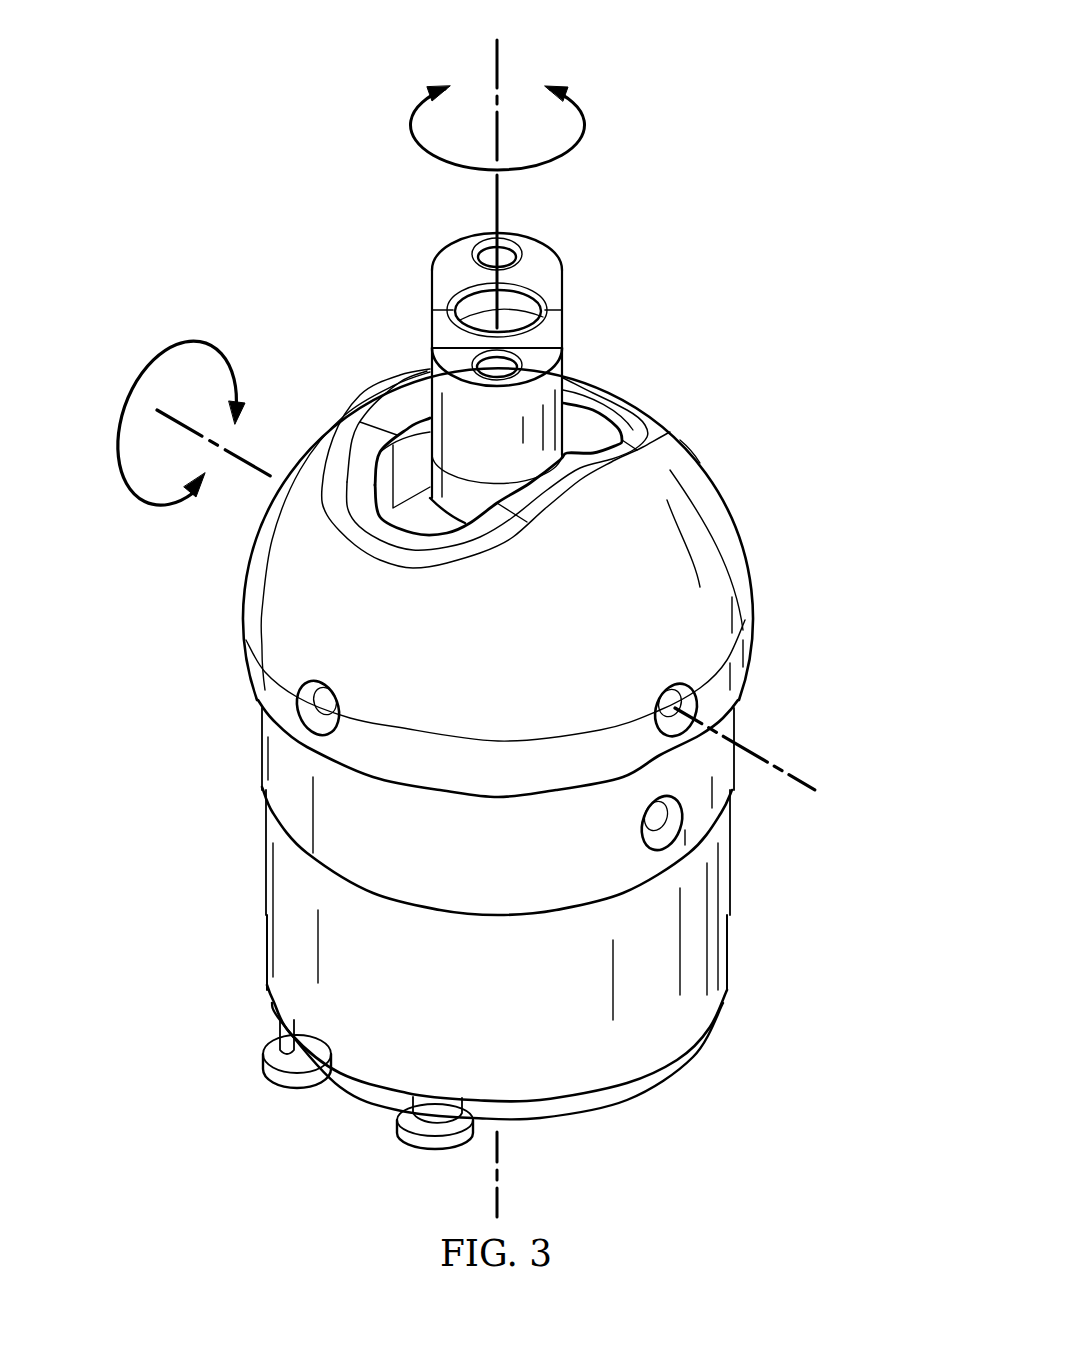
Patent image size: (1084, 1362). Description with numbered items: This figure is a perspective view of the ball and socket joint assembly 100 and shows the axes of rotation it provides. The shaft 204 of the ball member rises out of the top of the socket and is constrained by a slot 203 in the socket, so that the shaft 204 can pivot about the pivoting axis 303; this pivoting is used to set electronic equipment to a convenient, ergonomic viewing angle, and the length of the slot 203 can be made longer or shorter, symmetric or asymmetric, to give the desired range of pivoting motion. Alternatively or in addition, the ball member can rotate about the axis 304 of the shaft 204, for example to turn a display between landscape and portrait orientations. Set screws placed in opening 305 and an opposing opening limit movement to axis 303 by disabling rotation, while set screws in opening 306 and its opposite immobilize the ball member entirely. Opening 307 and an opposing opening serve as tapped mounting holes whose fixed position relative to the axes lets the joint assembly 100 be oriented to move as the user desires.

The ball and socket joint assembly 100 is at (480, 617).
The slot 203 is at (413, 457).
The shaft 204 is at (550, 390).
The axis 303 is at (803, 780).
The axis 304 is at (499, 54).
The opening 305 is at (693, 687).
The opening 306 is at (300, 688).
The opening 307 is at (640, 833).